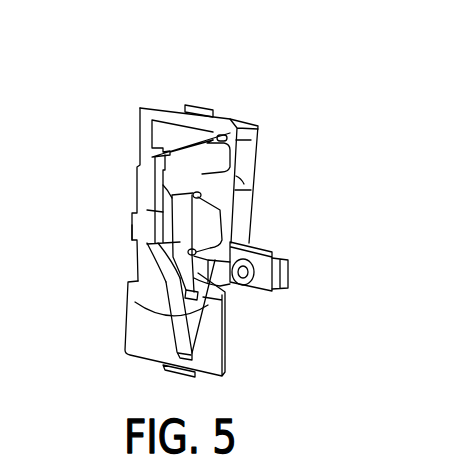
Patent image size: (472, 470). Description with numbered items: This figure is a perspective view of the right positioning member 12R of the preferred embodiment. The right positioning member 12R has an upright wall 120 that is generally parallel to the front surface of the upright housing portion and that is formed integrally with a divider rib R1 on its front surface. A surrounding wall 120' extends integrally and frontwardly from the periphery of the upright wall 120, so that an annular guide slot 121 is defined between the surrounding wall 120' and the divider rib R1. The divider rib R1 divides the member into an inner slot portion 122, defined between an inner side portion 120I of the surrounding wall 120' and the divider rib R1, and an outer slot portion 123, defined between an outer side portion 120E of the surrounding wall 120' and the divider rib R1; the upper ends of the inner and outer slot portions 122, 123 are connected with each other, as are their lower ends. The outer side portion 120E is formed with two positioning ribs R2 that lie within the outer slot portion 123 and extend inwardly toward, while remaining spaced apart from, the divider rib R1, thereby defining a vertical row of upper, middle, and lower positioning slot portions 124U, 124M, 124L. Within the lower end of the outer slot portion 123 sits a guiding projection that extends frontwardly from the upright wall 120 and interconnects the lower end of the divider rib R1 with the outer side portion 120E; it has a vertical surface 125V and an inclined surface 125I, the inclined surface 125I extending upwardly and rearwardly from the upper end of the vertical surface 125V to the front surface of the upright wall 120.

The right positioning member 12R is at (283, 100).
The upright wall 120 is at (191, 211).
The surrounding wall 120' is at (281, 148).
The outer side portion of the surrounding wall 120E is at (245, 200).
The inner side portion of the surrounding wall 120I is at (132, 231).
The annular guide slot 121 is at (202, 178).
The inner slot portion 122 is at (163, 213).
The outer slot portion 123 is at (265, 248).
The upper positioning slot portion 124U is at (213, 158).
The middle positioning slot portion 124M is at (222, 222).
The lower positioning slot portion 124L is at (232, 294).
The inclined surface 125I is at (225, 305).
The vertical surface 125V is at (135, 302).
The divider rib R1 is at (172, 198).
The positioning ribs R2 is at (243, 181).